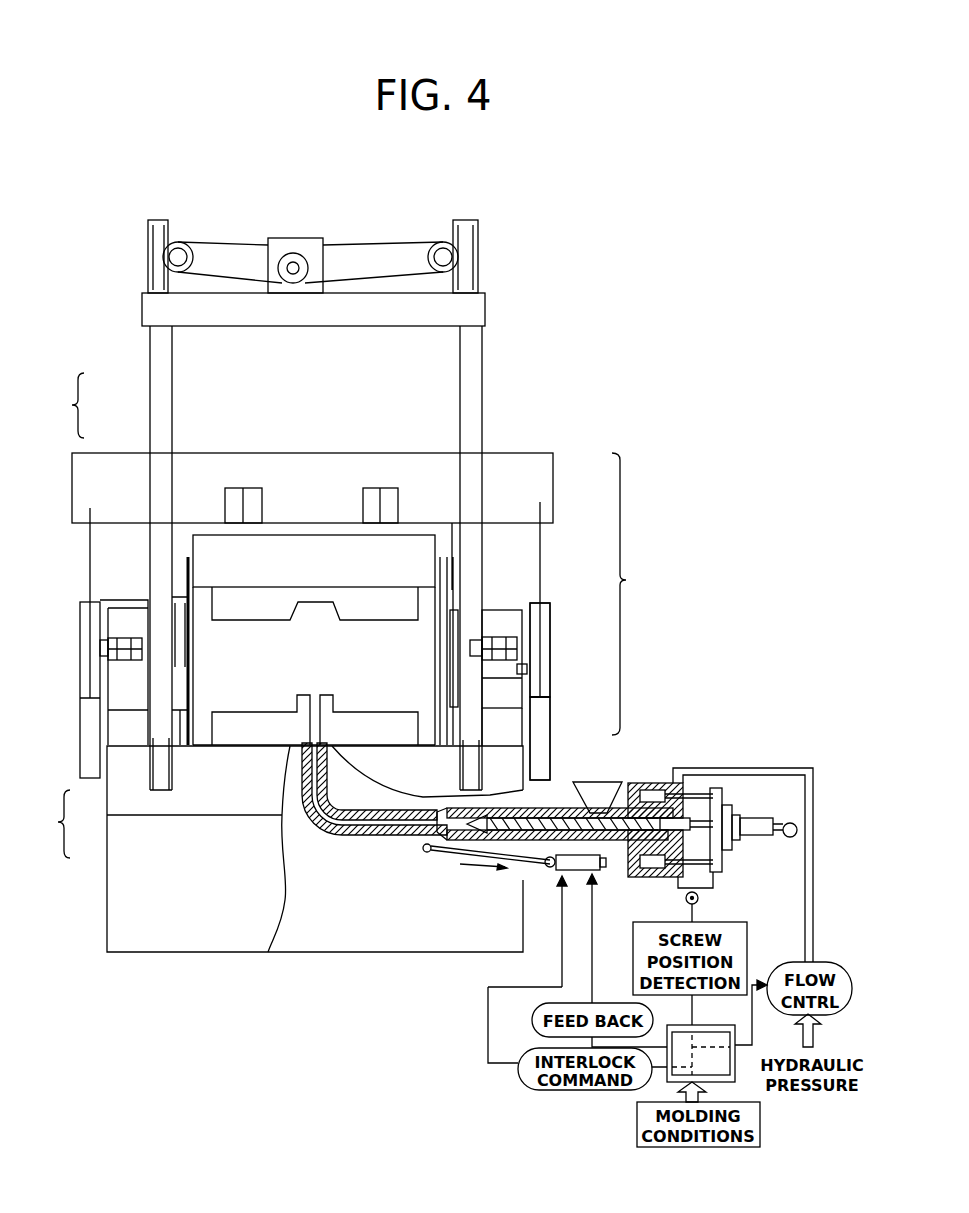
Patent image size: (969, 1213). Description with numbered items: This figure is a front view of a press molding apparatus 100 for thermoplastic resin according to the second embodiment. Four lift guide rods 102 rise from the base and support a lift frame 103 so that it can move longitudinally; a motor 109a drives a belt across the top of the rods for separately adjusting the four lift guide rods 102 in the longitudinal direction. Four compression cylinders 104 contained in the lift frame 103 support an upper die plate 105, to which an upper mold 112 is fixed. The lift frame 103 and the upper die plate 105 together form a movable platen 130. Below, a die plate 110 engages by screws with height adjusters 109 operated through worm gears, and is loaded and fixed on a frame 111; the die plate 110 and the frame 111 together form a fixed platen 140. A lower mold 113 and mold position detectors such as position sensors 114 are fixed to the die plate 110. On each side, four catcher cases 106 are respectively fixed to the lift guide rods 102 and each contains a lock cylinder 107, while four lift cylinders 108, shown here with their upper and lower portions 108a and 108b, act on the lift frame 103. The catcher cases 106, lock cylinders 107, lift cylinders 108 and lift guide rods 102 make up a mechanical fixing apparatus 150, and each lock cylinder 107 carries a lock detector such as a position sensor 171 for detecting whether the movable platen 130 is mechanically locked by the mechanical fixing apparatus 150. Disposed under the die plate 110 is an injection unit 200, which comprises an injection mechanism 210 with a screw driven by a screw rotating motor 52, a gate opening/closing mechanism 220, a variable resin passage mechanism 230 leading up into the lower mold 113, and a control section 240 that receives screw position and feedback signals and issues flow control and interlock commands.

The press molding apparatus 100 is at (488, 364).
The lift guide rods 102 is at (472, 502).
The lift frame 103 is at (138, 452).
The compression cylinders 104 is at (397, 502).
The upper die plate 105 is at (215, 548).
The catcher cases 106 is at (505, 697).
The lock cylinders 107 is at (493, 637).
The lift cylinders 108 is at (552, 640).
The upper side plate portion 108a is at (548, 604).
The lower side plate portion 108b is at (535, 740).
The height adjusters 109 is at (466, 271).
The motor 109a is at (325, 238).
The die plate 110 is at (125, 801).
The frame 111 is at (125, 842).
The upper mold 112 is at (252, 611).
The lower mold 113 is at (245, 723).
The position sensors 114 is at (148, 600).
The movable platen 130 is at (56, 405).
The fixed platen 140 is at (42, 824).
The mechanical fixing apparatus 150 is at (645, 594).
The position sensor 171 is at (527, 668).
The injection unit 200 is at (552, 800).
The injection mechanism 210 is at (525, 863).
The gate opening/closing mechanism 220 is at (423, 842).
The variable resin passage mechanism 230 is at (407, 840).
The control section 240 is at (735, 1057).
The screw rotating motor 52 is at (748, 810).